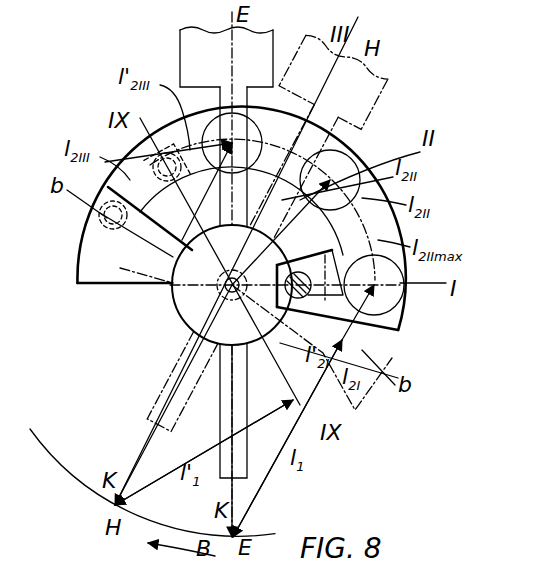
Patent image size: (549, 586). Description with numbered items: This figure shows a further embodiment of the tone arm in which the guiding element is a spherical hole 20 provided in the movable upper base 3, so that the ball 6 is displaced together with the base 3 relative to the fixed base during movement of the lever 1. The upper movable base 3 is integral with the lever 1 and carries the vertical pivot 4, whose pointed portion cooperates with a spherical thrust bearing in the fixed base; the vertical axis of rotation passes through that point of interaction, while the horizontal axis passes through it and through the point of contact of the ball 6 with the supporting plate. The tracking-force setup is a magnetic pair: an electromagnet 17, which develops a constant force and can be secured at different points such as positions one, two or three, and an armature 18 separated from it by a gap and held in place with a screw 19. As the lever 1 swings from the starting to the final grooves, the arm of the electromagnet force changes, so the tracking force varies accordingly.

The lever 1 is at (221, 432).
The upper movable base 3 is at (105, 270).
The vertical pivot 4 is at (174, 310).
The ball 6 is at (100, 217).
The electromagnet 17 is at (350, 160).
The armature 18 is at (392, 333).
The screw 19 is at (348, 322).
The spherical hole 20 is at (90, 250).